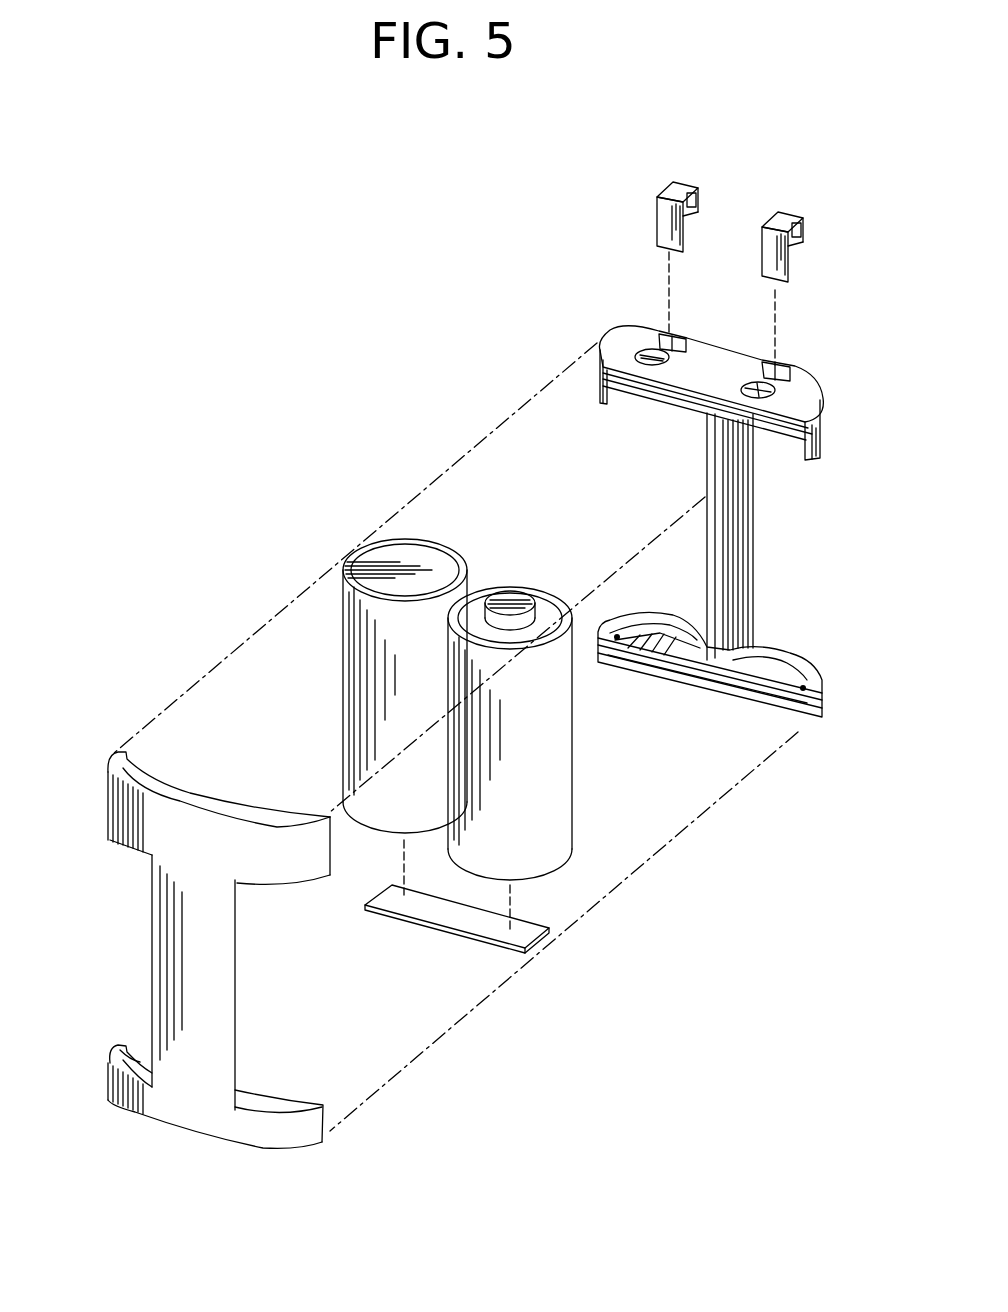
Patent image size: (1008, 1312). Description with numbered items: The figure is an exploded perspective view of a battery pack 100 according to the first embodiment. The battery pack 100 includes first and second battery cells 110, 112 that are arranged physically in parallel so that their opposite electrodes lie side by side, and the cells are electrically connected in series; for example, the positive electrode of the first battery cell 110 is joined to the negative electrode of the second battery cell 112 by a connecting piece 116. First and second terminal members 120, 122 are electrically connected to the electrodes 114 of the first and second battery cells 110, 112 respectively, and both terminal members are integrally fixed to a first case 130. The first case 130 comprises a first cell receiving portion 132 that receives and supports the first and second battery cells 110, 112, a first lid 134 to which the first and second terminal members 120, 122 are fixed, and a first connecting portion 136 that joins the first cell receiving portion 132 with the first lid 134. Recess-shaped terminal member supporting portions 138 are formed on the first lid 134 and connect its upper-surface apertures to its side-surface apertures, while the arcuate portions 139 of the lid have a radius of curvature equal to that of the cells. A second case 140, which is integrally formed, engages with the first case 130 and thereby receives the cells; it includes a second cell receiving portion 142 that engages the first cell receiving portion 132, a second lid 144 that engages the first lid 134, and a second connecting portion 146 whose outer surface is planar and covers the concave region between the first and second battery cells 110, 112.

The battery pack 100 is at (292, 265).
The first battery cell 110 is at (345, 725).
The second battery cell 112 is at (560, 728).
The electrodes 114 is at (507, 588).
The connecting piece 116 is at (430, 928).
The first terminal member 120 is at (687, 182).
The second terminal member 122 is at (793, 212).
The first case 130 is at (700, 490).
The first cell receiving portion 132 is at (790, 648).
The first lid 134 is at (822, 425).
The first connecting portion 136 is at (753, 557).
The terminal member supporting portions 138 is at (777, 363).
The arcuate portions 139 is at (617, 337).
The second case 140 is at (184, 985).
The second cell receiving portion 142 is at (303, 1140).
The second lid 144 is at (300, 868).
The second connecting portion 146 is at (232, 995).